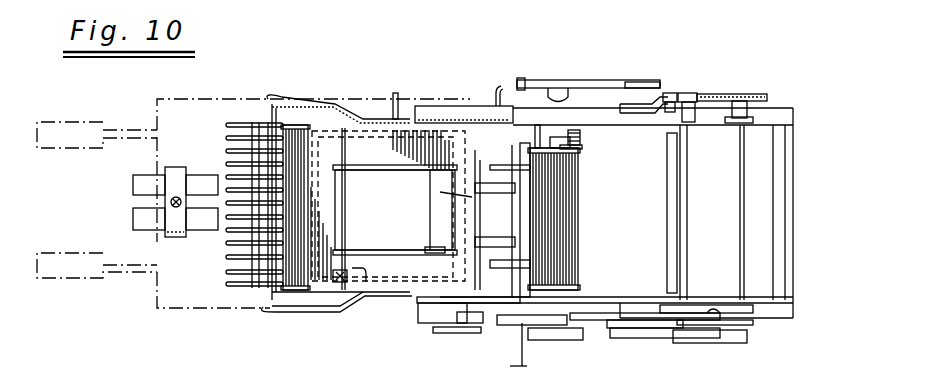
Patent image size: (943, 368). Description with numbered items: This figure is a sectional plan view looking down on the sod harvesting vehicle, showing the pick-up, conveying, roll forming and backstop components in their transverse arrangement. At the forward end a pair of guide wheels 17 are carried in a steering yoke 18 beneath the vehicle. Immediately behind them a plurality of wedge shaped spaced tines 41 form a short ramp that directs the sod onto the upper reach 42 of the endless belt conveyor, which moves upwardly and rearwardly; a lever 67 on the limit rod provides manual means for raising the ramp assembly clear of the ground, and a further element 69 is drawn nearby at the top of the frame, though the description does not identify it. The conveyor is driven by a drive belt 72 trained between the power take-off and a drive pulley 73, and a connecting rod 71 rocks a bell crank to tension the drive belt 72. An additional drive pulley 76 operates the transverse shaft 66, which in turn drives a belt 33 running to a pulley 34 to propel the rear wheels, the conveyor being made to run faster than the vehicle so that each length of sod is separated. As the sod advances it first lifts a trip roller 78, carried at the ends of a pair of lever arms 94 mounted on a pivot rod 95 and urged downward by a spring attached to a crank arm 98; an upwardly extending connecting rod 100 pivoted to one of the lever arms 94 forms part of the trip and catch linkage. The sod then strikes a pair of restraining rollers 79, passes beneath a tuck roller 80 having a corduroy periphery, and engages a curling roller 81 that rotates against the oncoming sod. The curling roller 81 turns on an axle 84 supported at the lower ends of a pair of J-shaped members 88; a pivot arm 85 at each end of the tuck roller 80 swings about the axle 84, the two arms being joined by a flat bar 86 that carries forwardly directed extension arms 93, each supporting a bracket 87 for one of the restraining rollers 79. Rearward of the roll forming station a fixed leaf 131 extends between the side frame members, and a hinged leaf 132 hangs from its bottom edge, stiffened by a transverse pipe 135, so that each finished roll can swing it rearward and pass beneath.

The guide wheels 17 is at (133, 187).
The steering yoke 18 is at (177, 174).
The belt 33 is at (650, 338).
The pulley 34 is at (560, 330).
The tines 41 is at (228, 245).
The upper reach 42 is at (308, 203).
The shaft 66 is at (735, 205).
The lever 67 is at (394, 93).
The conduit 69 is at (493, 91).
The connecting rod 71 is at (642, 108).
The drive belt 72 is at (627, 82).
The drive pulley 73 is at (573, 80).
The drive pulley 76 is at (758, 93).
The trip roller 78 is at (440, 213).
The restraining rollers 79 is at (480, 178).
The tuck roller 80 is at (442, 192).
The curling roller 81 is at (574, 208).
The axle 84 is at (581, 143).
The pivot arm 85 is at (538, 125).
The flat bar 86 is at (527, 240).
The bracket 87 is at (484, 180).
The J-shaped members 88 is at (588, 153).
The extension arms 93 is at (507, 268).
The lever arms 94 is at (393, 171).
The pivot rod 95 is at (345, 155).
The crank arm 98 is at (375, 270).
The connecting rod 100 is at (440, 247).
The leaf 131 is at (679, 215).
The leaf 132 is at (679, 250).
The pipe 135 is at (668, 173).